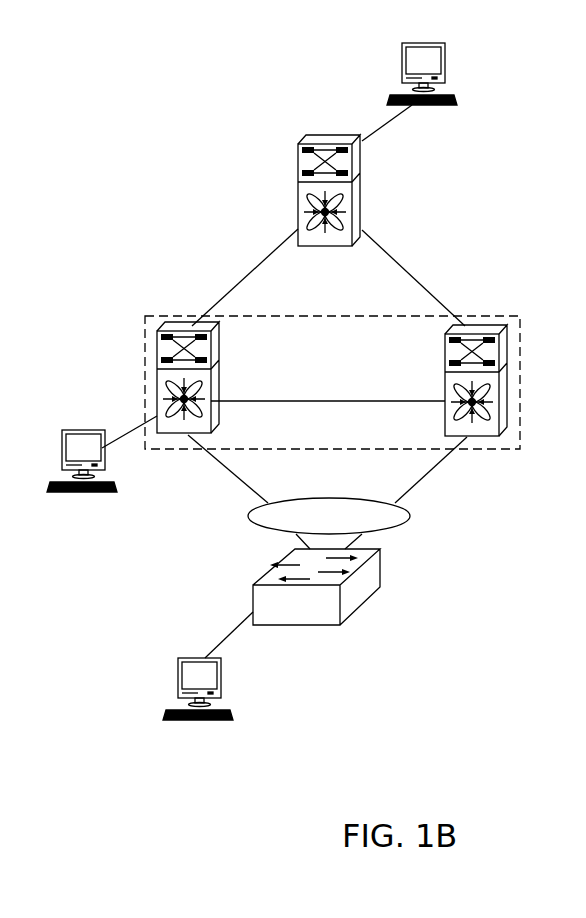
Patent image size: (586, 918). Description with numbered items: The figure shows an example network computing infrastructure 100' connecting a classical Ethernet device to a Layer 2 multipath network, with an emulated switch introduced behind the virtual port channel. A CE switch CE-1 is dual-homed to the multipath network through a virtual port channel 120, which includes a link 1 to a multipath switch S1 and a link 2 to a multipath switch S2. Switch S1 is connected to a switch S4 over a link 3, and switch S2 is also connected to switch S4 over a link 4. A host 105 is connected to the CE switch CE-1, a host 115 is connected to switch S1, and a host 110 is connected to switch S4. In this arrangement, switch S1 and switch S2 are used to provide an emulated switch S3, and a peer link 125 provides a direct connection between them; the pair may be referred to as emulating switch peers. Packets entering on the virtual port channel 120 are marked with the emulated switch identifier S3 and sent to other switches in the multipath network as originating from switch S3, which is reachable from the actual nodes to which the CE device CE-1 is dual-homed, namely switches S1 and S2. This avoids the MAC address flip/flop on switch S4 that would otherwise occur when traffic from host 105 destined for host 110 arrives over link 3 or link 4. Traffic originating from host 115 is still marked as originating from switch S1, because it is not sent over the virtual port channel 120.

The network computing infrastructure 100' is at (117, 61).
The host 105 is at (187, 721).
The host 110 is at (445, 57).
The host 115 is at (67, 494).
The virtual port channel 120 is at (412, 516).
The peer link 125 is at (318, 401).
The link 1 is at (240, 480).
The link 2 is at (433, 467).
The link 3 is at (243, 279).
The link 4 is at (410, 273).
The multipath switch S1 is at (157, 402).
The multipath switch S2 is at (505, 405).
The emulated switch S3 is at (521, 336).
The switch S4 is at (307, 247).
The CE switch CE-1 is at (288, 626).